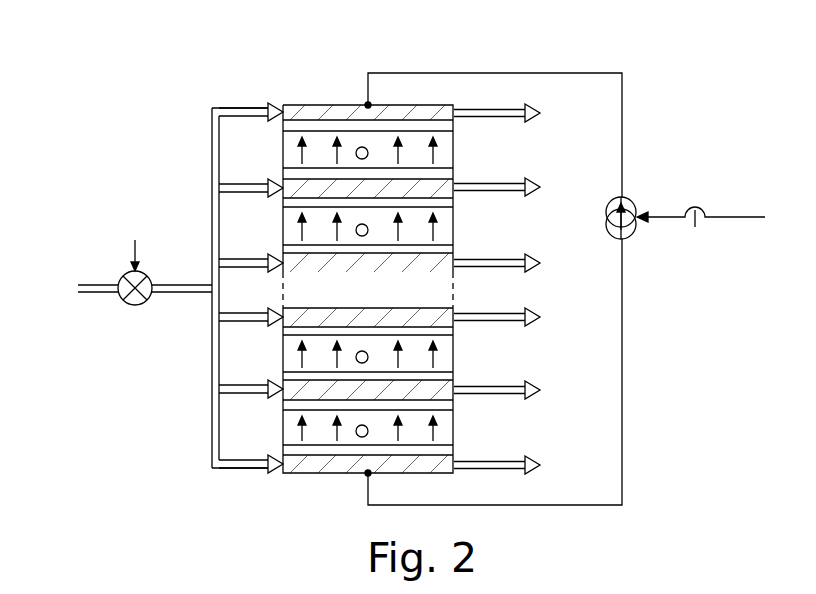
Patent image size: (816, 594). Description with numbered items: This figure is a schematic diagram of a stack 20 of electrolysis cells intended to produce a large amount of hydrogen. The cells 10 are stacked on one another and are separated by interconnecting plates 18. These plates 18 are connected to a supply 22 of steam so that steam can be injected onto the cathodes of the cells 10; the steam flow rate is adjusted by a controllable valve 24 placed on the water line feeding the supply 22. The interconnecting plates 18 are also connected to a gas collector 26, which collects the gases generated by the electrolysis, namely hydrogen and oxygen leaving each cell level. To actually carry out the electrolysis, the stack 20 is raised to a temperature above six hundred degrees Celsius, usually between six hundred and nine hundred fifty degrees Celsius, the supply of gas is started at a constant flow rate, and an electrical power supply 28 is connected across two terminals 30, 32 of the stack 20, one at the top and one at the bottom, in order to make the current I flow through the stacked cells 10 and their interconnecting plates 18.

The electrolysis cell 10 is at (455, 140).
The interconnecting plate 18 is at (420, 110).
The stack 20 is at (236, 86).
The steam supply 22 is at (198, 382).
The controllable valve 24 is at (137, 306).
The gas collector 26 is at (483, 109).
The electrical power supply 28 is at (637, 228).
The terminal 30 is at (366, 103).
The terminal 32 is at (367, 476).